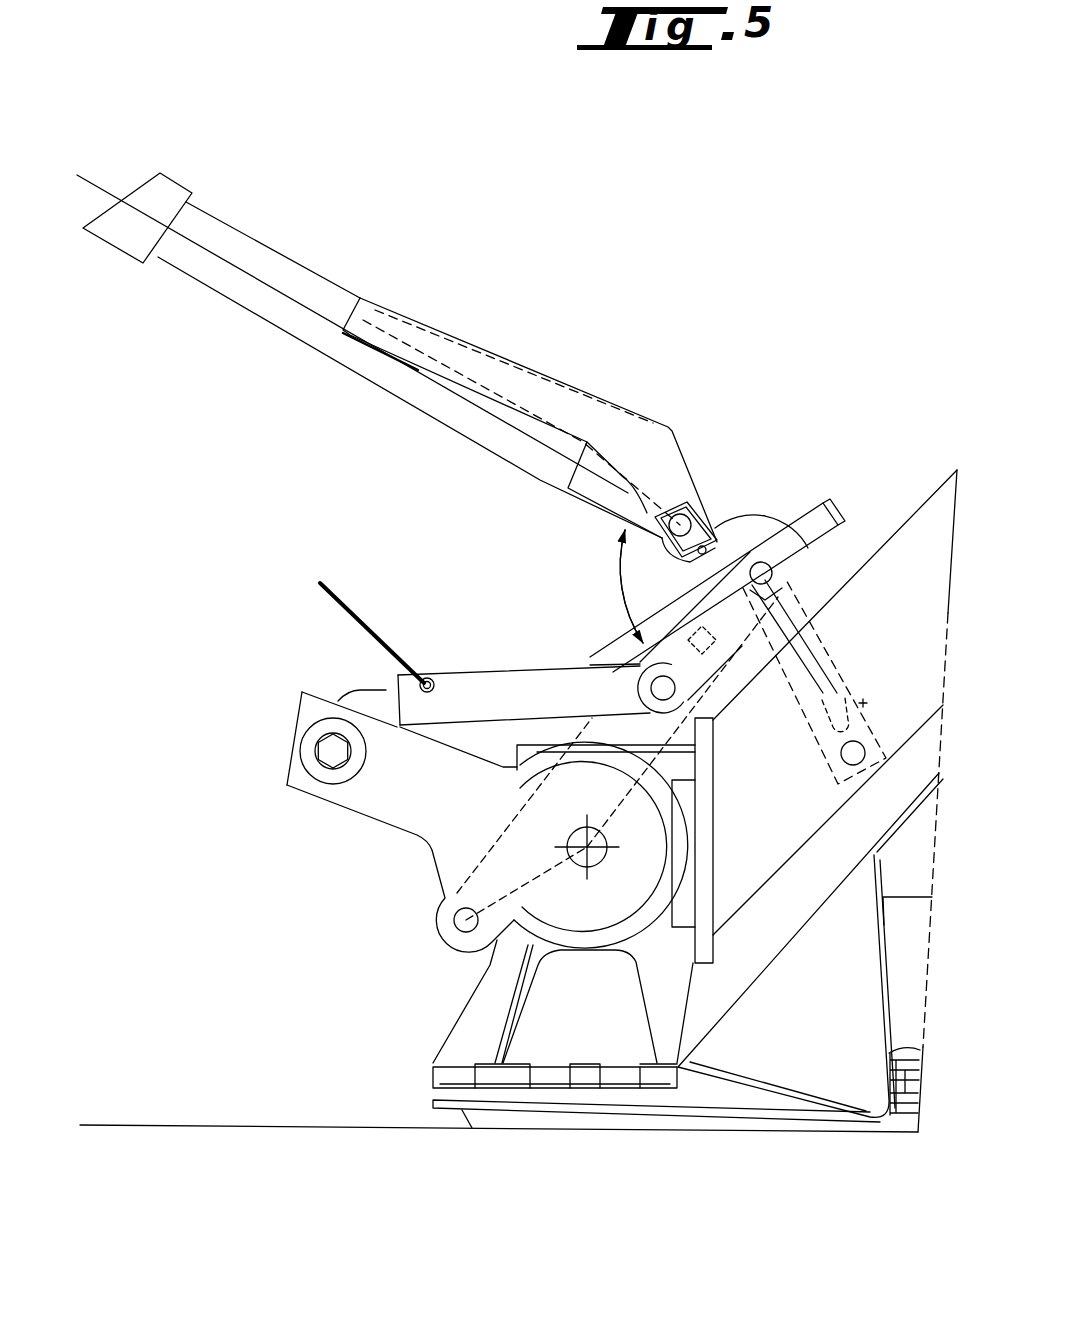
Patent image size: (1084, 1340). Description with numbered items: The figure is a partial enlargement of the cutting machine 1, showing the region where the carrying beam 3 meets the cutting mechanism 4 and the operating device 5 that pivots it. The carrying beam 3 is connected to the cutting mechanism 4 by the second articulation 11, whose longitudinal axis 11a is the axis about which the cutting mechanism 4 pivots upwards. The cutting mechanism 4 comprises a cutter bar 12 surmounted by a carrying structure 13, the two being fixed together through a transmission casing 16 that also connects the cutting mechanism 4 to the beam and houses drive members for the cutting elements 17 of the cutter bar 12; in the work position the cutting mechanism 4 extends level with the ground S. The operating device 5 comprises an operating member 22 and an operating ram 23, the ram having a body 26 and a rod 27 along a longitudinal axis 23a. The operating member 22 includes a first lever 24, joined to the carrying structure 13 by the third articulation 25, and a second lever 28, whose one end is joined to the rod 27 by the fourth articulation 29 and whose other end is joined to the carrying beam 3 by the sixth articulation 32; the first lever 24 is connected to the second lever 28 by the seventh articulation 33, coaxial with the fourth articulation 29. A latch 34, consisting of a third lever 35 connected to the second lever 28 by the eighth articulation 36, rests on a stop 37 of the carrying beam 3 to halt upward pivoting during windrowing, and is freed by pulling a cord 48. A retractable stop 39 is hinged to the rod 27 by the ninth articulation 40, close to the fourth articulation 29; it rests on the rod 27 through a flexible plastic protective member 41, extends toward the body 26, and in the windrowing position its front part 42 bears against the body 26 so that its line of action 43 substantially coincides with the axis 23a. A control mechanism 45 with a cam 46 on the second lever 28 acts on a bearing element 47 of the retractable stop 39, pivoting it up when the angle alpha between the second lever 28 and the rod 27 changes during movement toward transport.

The cutting machine 1 is at (817, 785).
The carrying beam 3 is at (532, 783).
The cutting mechanism 4 is at (719, 1131).
The operating device 5 is at (746, 553).
The second articulation 11 is at (601, 845).
The longitudinal axis 11a is at (608, 838).
The cutter bar 12 is at (905, 1113).
The carrying structure 13 is at (947, 546).
The transmission casing 16 is at (597, 1016).
The cutting elements 17 is at (910, 908).
The operating member 22 is at (788, 601).
The operating ram 23 is at (369, 324).
The longitudinal axis 23a is at (352, 302).
The first lever 24 is at (864, 703).
The third articulation 25 is at (857, 752).
The body 26 is at (173, 190).
The rod 27 is at (212, 280).
The second lever 28 is at (840, 527).
The fourth articulation 29 is at (843, 582).
The sixth articulation 32 is at (462, 925).
The seventh articulation 33 is at (774, 572).
The latch 34 is at (502, 635).
The third lever 35 is at (467, 683).
The eighth articulation 36 is at (662, 686).
The stop 37 is at (362, 692).
The retractable stop 39 is at (529, 429).
The ninth articulation 40 is at (676, 516).
The protective member 41 is at (388, 303).
The front part 42 is at (345, 318).
The line of action 43 is at (90, 182).
The control mechanism 45 is at (731, 512).
The cam 46 is at (755, 518).
The bearing element 47 is at (700, 563).
The cord 48 is at (330, 596).
The ground S is at (229, 1125).
The angle alpha is at (609, 586).